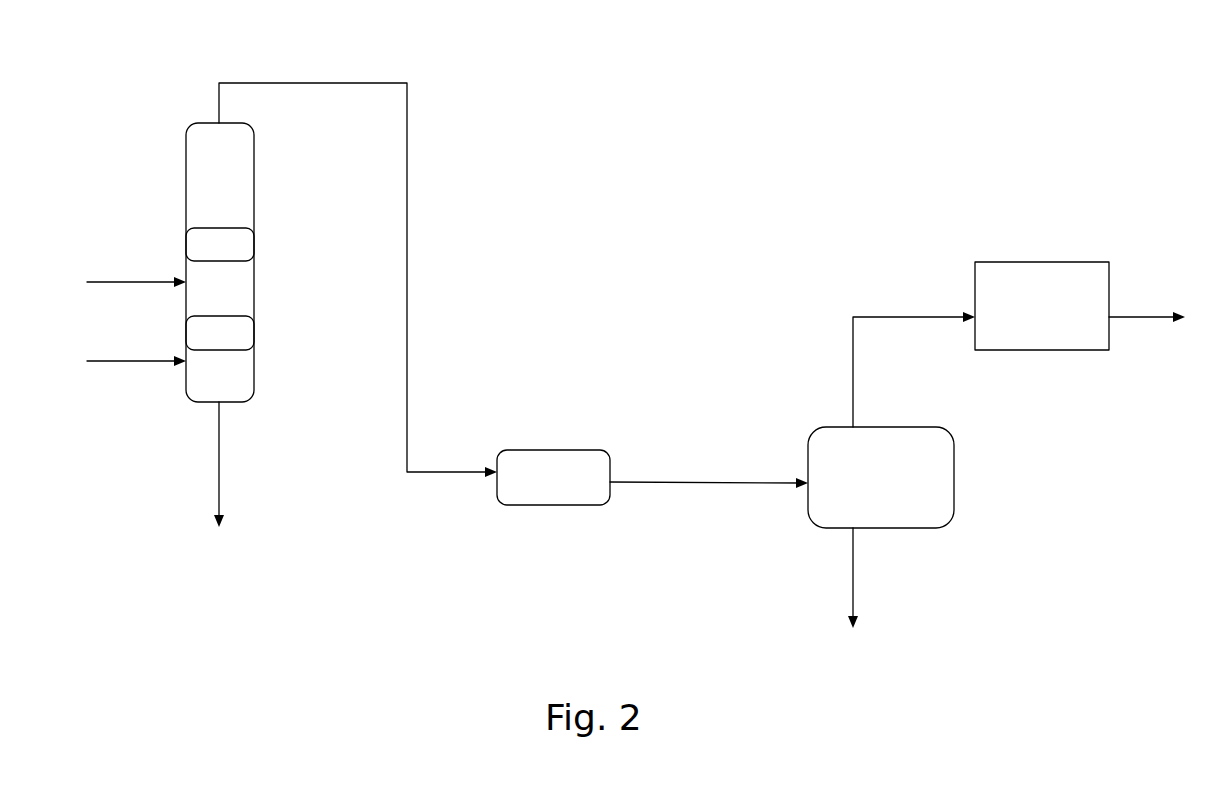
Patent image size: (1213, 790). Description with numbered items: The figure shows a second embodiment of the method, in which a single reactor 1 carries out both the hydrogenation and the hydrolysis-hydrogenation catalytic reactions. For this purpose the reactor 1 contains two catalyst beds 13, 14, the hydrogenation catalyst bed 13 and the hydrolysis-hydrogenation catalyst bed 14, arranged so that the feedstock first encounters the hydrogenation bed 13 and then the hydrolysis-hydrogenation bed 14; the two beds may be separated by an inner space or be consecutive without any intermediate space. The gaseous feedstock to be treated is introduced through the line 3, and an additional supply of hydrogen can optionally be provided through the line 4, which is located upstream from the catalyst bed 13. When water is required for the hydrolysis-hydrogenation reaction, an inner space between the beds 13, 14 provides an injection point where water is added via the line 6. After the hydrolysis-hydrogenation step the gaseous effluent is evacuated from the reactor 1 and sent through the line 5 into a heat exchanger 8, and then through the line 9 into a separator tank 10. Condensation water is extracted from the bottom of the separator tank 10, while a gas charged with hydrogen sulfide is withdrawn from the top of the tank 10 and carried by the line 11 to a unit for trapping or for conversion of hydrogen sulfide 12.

The reactor 1 is at (254, 378).
The line 3 is at (219, 440).
The line 4 is at (122, 361).
The line 5 is at (408, 140).
The line 6 is at (128, 282).
The heat exchanger 8 is at (540, 450).
The line 9 is at (688, 483).
The separator tank 10 is at (954, 487).
The gas outlet line 11 is at (863, 315).
The unit for trapping or for conversion of H2S 12 is at (1045, 262).
The hydrogenation catalyst bed 13 is at (240, 327).
The hydrolysis-hydrogenation catalyst bed 14 is at (245, 232).